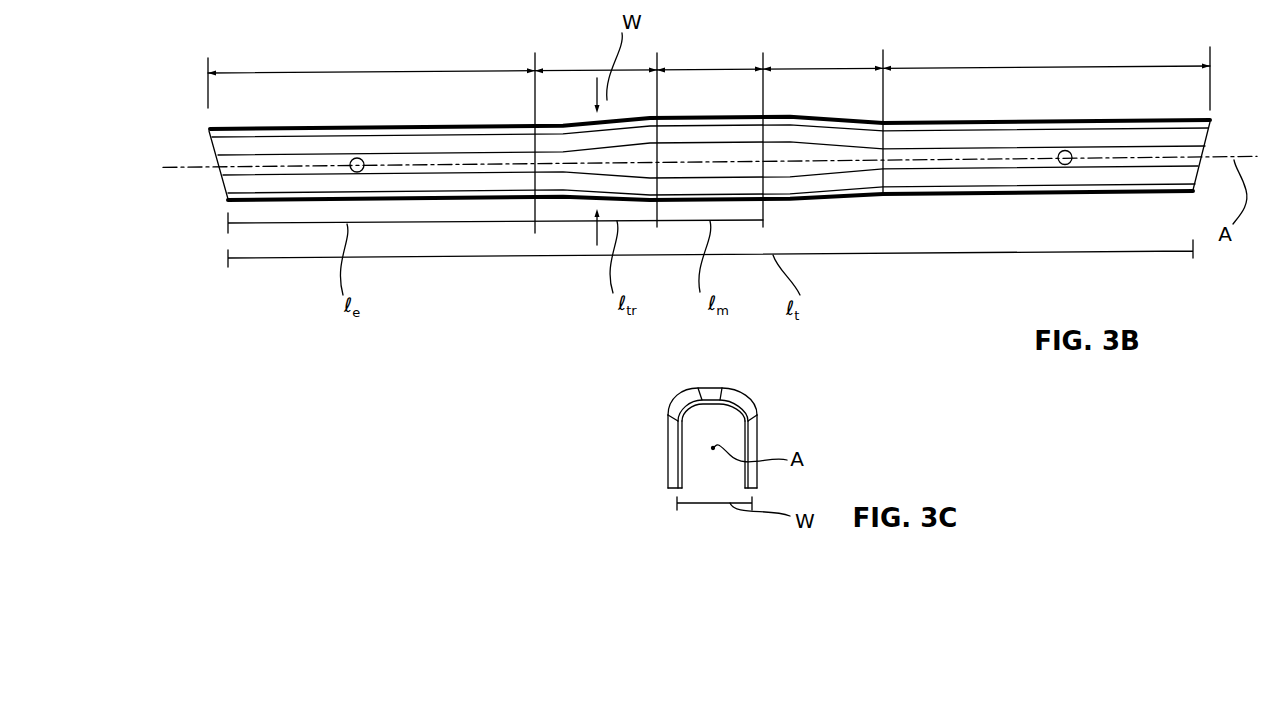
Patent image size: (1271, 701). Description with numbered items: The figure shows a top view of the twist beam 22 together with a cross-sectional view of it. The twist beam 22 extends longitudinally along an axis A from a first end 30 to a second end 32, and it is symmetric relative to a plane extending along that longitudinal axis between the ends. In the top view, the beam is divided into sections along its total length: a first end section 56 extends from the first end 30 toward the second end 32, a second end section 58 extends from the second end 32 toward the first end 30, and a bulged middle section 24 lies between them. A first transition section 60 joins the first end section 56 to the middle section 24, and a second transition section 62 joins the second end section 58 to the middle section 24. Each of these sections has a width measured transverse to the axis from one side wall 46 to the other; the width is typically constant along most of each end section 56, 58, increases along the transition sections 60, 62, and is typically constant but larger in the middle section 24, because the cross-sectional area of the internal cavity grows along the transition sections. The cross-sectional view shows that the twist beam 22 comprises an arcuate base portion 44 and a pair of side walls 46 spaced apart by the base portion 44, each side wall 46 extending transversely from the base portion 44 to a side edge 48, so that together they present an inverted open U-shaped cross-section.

In FIG. 3B, the twist beam 22 is at (1025, 223).
In FIG. 3B, the middle section 24 is at (703, 69).
In FIG. 3B, the first end 30 is at (210, 129).
In FIG. 3B, the second end 32 is at (1212, 122).
In FIG. 3B, the first end section 56 is at (367, 72).
In FIG. 3B, the second end section 58 is at (1027, 65).
In FIG. 3B, the first transition section 60 is at (596, 70).
In FIG. 3B, the second transition section 62 is at (815, 68).
In FIG. 3C, the base portion 44 is at (698, 389).
In FIG. 3C, the side walls 46 is at (672, 431).
In FIG. 3C, the side edge 48 is at (669, 488).